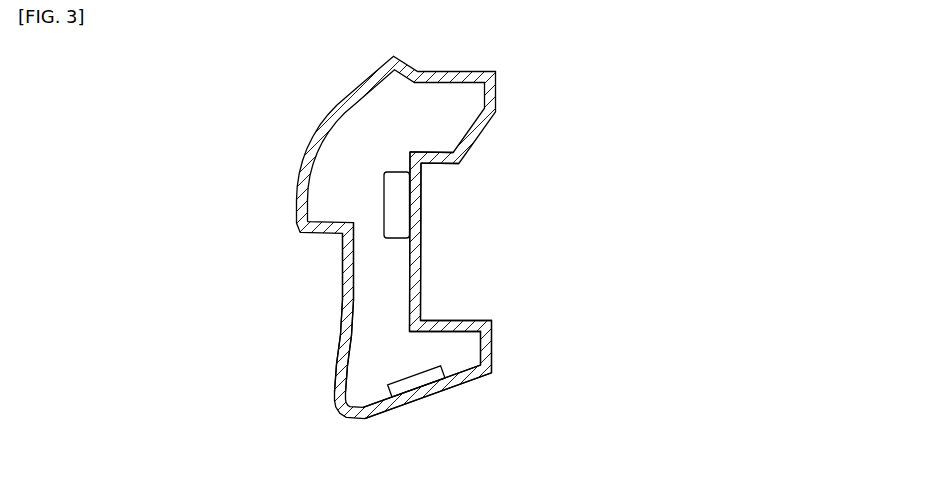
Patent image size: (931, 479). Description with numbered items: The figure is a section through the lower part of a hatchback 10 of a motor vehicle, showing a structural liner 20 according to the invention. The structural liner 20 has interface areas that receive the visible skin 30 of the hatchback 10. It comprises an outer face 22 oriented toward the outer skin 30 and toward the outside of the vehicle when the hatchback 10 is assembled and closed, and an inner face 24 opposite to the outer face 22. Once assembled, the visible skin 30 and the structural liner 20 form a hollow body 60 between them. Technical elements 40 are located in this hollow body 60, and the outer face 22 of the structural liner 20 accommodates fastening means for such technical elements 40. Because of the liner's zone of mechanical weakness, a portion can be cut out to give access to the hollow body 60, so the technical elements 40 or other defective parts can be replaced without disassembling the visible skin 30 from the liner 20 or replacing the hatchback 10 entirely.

The hatchback 10 is at (627, 244).
The structural liner 20 is at (487, 346).
The outer face 22 is at (406, 158).
The inner face 24 is at (423, 292).
The skin 30 is at (343, 256).
The technical elements 40 is at (397, 205).
The hollow body 60 is at (374, 315).